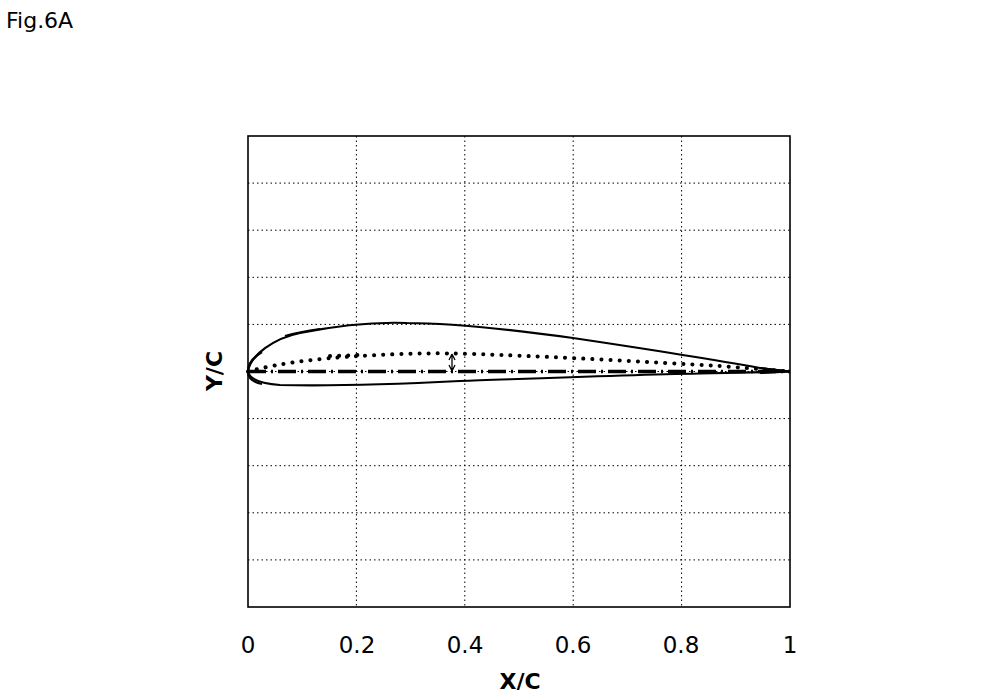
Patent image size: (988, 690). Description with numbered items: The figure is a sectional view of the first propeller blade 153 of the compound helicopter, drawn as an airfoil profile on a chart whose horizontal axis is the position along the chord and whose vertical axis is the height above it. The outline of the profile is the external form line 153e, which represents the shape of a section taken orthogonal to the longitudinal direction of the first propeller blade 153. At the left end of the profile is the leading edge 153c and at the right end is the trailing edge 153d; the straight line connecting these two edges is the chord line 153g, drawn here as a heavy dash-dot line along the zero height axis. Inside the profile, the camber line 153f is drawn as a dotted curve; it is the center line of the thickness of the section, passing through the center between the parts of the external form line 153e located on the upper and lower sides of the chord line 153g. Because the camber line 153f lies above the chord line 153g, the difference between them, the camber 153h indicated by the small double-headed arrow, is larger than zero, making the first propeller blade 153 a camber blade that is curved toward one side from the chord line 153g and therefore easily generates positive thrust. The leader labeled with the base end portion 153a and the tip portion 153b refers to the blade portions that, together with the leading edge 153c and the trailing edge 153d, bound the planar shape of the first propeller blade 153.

The first propeller blade 153 is at (497, 289).
The base end portion 153a is at (472, 343).
The tip portion 153b is at (566, 439).
The leading edge 153c is at (248, 372).
The trailing edge 153d is at (790, 372).
The external form line 153e is at (303, 340).
The camber line 153f is at (407, 355).
The chord line 153g is at (345, 358).
The camber 153h is at (452, 362).